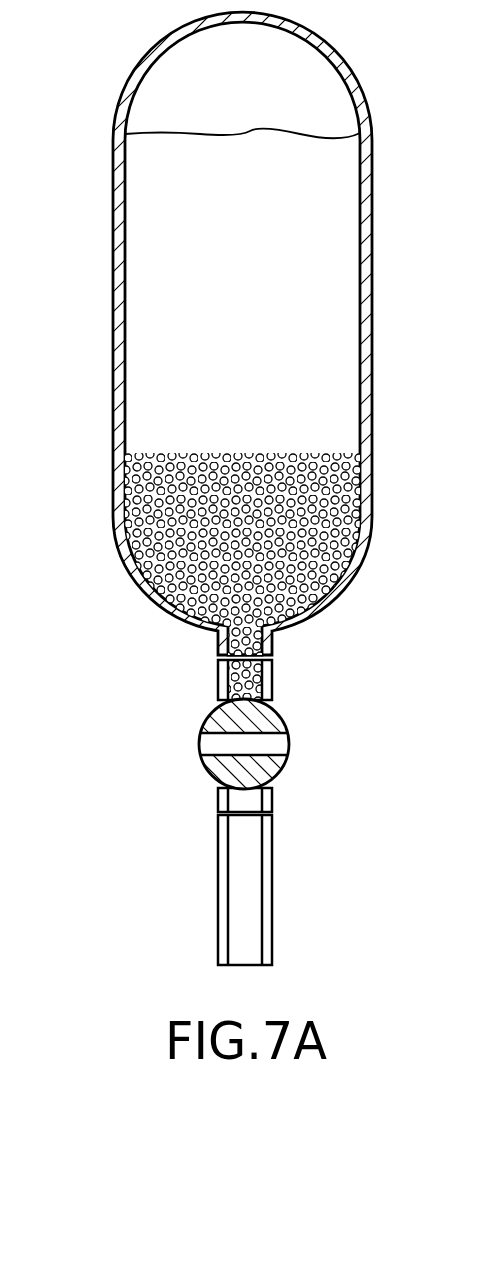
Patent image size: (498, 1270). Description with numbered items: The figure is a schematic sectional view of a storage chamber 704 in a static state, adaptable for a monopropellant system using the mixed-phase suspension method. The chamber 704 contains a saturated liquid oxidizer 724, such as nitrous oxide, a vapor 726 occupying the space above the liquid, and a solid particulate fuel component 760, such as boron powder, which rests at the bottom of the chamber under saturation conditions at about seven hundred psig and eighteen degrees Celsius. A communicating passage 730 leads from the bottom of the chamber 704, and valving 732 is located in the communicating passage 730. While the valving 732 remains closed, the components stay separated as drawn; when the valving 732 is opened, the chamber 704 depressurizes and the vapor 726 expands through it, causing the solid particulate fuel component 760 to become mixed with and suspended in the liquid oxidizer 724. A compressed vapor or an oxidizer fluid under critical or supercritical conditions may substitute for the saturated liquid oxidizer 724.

The chamber 704 is at (153, 52).
The vapor 726 is at (140, 113).
The saturated liquid oxidizer 724 is at (146, 228).
The solid particulate fuel component 760 is at (130, 455).
The communicating passage 730 is at (229, 677).
The valving 732 is at (206, 765).